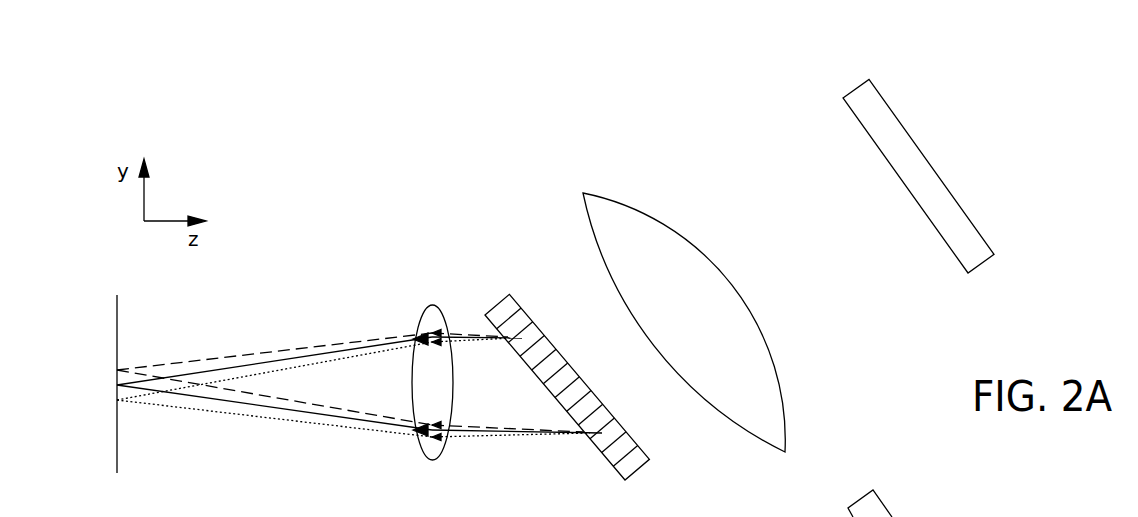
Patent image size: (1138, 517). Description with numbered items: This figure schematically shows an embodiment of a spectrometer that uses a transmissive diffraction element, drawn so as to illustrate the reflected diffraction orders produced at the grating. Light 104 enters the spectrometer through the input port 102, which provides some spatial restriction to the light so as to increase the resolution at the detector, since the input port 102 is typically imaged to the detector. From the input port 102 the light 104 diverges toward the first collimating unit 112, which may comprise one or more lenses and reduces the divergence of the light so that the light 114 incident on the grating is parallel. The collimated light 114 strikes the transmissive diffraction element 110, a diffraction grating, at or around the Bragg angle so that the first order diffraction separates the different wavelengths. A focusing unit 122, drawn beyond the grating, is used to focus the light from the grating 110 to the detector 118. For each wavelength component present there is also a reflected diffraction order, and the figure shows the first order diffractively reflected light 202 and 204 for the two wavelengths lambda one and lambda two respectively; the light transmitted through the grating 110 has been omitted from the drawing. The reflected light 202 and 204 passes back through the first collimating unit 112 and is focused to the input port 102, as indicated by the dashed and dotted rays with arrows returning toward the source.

The input port 102 is at (118, 370).
The light 104 is at (260, 362).
The transmissive diffraction element 110 is at (498, 298).
The first collimating unit 112 is at (432, 303).
The light incident on the grating 114 is at (460, 432).
The detector 118 is at (847, 93).
The focusing unit 122 is at (583, 193).
The first order diffractively reflected light 202 is at (200, 358).
The first order diffractively reflected light 204 is at (228, 415).